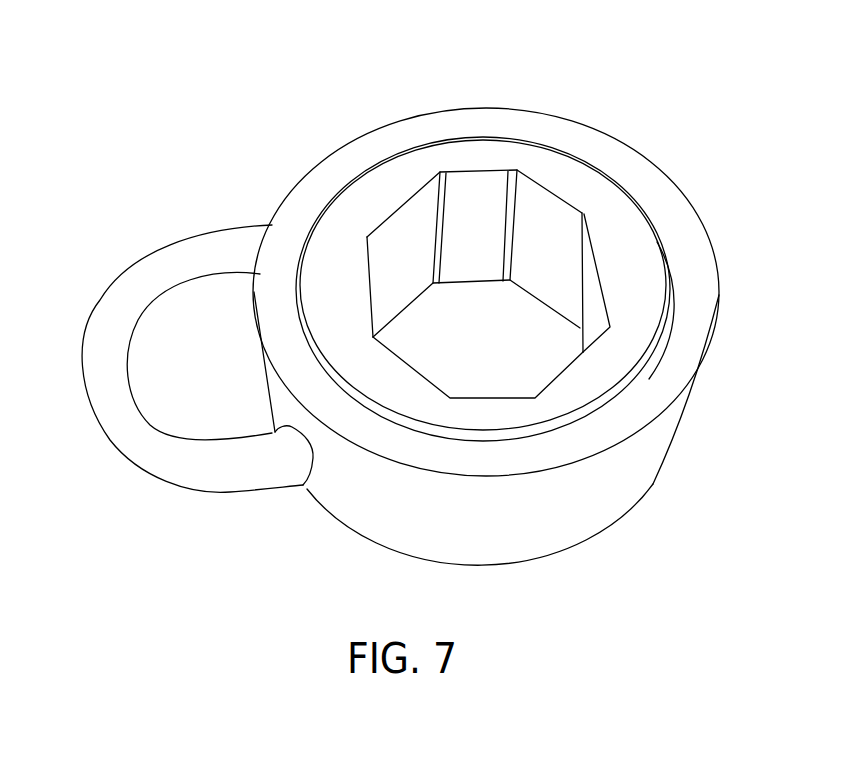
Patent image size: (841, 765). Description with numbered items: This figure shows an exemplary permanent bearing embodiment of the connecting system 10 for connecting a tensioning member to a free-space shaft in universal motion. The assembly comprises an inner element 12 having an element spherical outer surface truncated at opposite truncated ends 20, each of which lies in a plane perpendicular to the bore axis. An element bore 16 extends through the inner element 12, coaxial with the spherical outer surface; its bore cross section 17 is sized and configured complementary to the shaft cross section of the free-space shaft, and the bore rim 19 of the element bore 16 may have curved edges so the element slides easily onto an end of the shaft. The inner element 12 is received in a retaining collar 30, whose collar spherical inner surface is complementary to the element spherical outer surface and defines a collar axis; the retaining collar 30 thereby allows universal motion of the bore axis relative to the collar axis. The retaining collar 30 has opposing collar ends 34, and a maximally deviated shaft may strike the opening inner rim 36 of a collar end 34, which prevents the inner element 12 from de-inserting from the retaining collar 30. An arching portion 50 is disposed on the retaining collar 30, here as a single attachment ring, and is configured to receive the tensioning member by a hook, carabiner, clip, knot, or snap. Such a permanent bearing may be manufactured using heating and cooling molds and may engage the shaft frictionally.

The connecting system 10 is at (768, 108).
The inner element 12 is at (623, 378).
The element bore 16 is at (508, 350).
The bore cross section 17 is at (472, 168).
The bore rim 19 is at (542, 185).
The truncated ends 20 is at (625, 253).
The retaining collar 30 is at (372, 522).
The collar end 34 is at (605, 150).
The opening inner rim 36 is at (338, 187).
The arching portion 50 is at (92, 383).